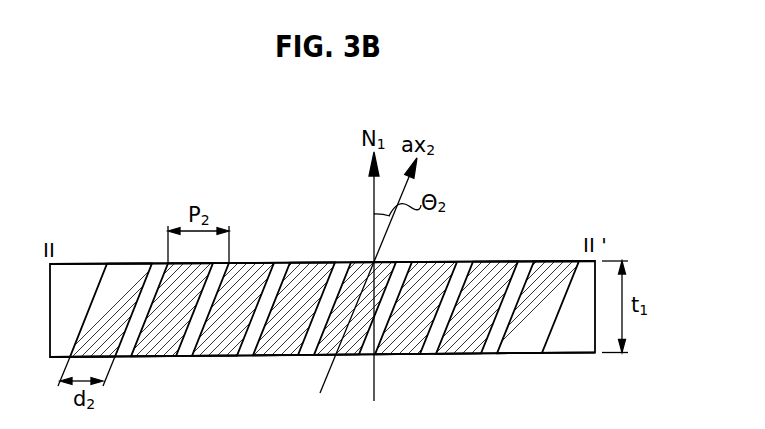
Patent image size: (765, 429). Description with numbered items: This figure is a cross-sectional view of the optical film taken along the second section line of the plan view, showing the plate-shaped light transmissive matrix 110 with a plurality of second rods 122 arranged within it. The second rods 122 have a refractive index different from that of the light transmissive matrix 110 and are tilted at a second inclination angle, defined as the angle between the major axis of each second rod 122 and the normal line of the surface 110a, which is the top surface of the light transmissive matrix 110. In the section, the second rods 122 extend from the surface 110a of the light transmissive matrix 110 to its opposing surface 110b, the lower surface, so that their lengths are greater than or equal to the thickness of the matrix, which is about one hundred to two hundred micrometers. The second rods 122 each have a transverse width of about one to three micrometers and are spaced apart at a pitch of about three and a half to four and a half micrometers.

The light transmissive matrix 110 is at (529, 261).
The surface of the light transmissive matrix 110a is at (282, 263).
The opposing surface of the light transmissive matrix 110b is at (426, 355).
The second rods 122 is at (491, 262).